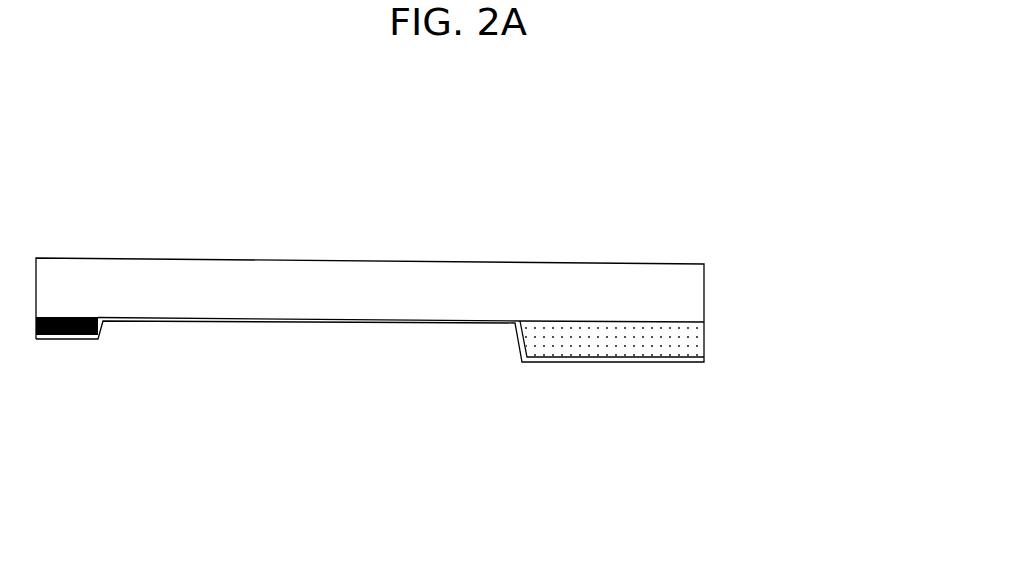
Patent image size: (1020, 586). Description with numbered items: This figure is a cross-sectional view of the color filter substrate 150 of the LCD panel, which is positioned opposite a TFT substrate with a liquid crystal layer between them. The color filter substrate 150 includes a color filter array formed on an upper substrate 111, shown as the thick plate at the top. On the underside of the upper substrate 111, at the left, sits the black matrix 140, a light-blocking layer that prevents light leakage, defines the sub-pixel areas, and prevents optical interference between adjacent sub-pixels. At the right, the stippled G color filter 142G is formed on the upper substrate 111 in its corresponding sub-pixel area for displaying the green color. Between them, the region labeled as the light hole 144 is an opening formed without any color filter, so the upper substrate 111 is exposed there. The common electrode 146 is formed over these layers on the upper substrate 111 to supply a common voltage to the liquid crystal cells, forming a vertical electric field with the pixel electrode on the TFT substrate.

The upper substrate 111 is at (704, 296).
The black matrix 140 is at (65, 337).
The G color filter 142G is at (704, 340).
The light hole 144 is at (296, 345).
The common electrode 146 is at (704, 362).
The color filter substrate 150 is at (459, 334).